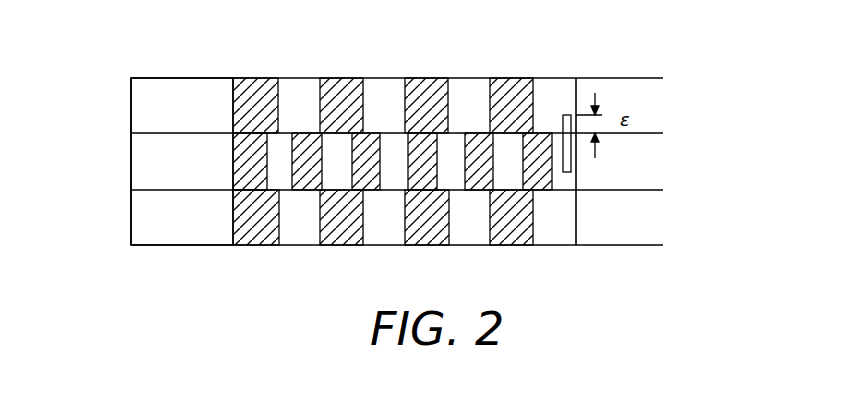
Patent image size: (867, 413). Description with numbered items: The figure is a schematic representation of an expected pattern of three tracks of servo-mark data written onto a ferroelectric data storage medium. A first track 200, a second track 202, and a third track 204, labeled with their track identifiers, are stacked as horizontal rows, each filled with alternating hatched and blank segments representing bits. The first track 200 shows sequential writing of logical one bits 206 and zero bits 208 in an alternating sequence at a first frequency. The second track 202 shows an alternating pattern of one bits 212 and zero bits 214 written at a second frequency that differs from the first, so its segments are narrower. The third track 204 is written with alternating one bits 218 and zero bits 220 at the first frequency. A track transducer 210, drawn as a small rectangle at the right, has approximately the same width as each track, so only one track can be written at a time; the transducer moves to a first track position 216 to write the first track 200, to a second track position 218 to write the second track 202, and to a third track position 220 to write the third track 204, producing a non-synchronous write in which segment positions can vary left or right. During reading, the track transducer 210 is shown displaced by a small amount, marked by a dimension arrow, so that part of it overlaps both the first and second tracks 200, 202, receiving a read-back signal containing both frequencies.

The first track 200 is at (303, 95).
The second track 202 is at (453, 148).
The third track 204 is at (473, 223).
The one bits 206 is at (345, 95).
The zero bits 208 is at (388, 98).
The track transducer 210 is at (563, 115).
The one bits 212 is at (262, 182).
The zero bits 214 is at (278, 176).
The first track position 216 is at (220, 78).
The second track position 218 is at (233, 177).
The third track position 220 is at (233, 217).